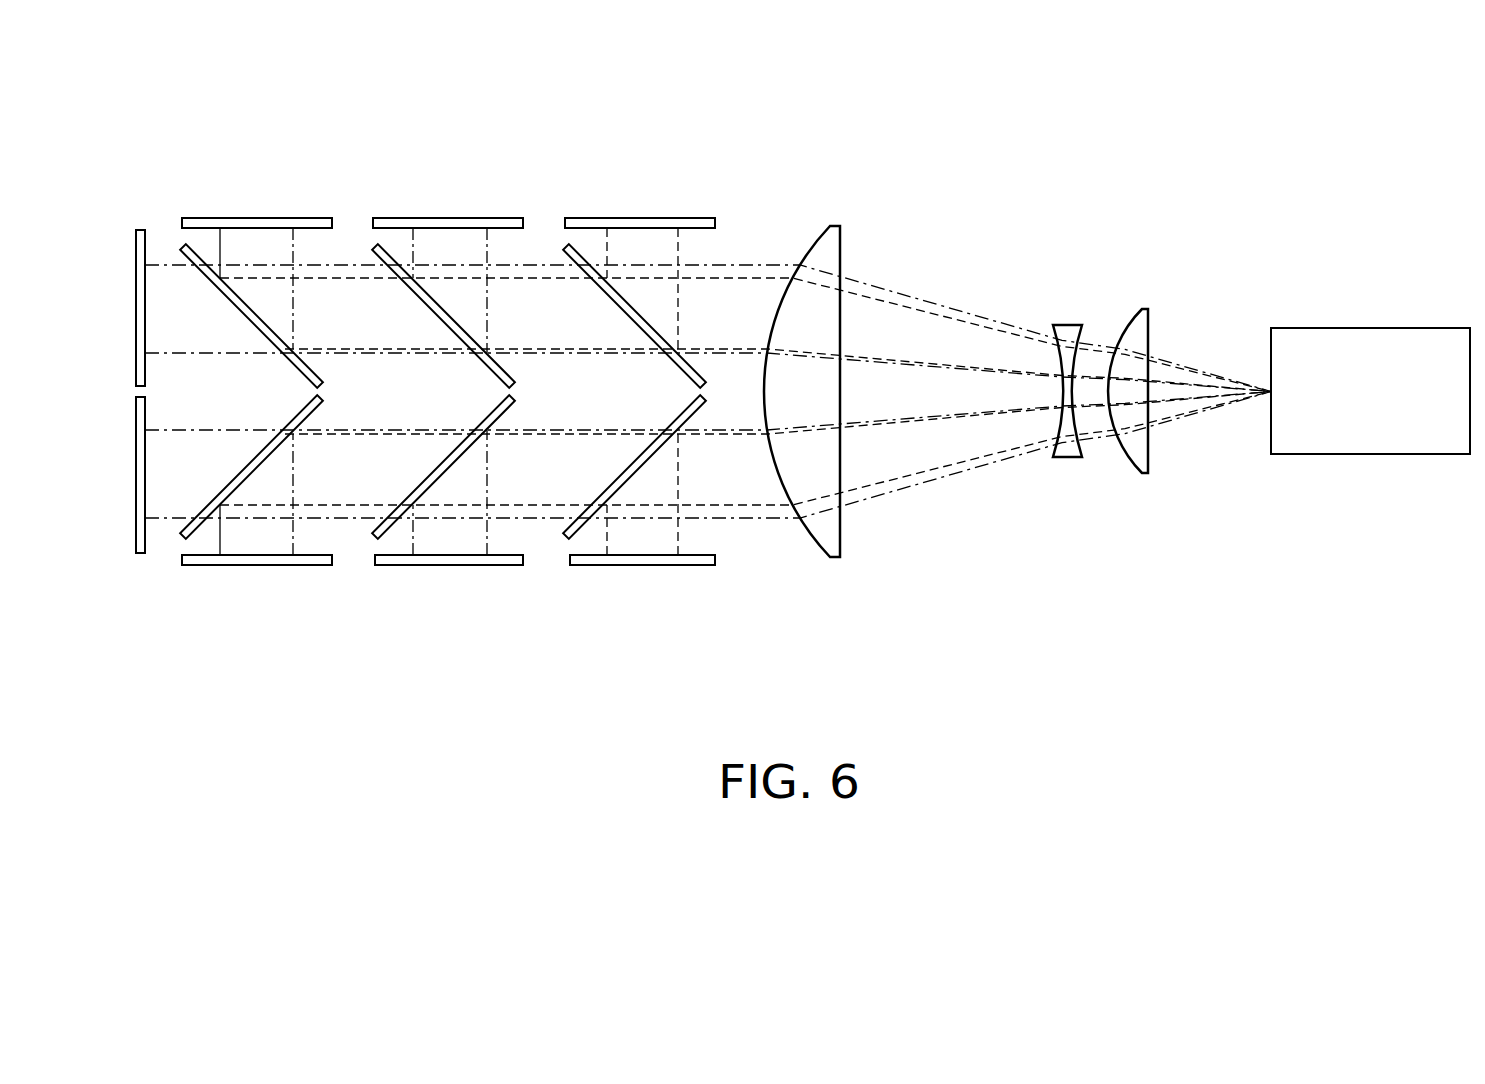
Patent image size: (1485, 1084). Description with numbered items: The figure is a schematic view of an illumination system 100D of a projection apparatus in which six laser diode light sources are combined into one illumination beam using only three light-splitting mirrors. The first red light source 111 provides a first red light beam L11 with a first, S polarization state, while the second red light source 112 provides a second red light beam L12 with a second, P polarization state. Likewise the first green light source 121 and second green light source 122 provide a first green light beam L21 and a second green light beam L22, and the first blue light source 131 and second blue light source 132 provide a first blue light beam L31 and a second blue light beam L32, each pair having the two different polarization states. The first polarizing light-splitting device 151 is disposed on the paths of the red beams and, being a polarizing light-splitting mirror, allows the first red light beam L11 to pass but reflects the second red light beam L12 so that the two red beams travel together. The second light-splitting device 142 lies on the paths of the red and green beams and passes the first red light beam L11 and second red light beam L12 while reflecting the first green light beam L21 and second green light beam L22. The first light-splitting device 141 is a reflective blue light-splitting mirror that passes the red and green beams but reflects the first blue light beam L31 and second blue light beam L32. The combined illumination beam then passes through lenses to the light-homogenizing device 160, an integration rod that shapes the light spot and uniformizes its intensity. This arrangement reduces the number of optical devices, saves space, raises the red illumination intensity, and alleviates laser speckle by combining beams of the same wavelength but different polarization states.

The illumination system 100D is at (1438, 699).
The first red light source 111 is at (141, 229).
The second red light source 112 is at (248, 218).
The first green light source 121 is at (443, 565).
The second green light source 122 is at (443, 218).
The first blue light source 131 is at (635, 565).
The second blue light source 132 is at (635, 218).
The first light-splitting device 141 is at (567, 243).
The second light-splitting device 142 is at (377, 243).
The first polarizing light-splitting device 151 is at (182, 244).
The light-homogenizing device 160 is at (1347, 340).
The first red light beam L11 is at (157, 266).
The second red light beam L12 is at (296, 247).
The first green light beam L21 is at (488, 536).
The second green light beam L22 is at (488, 247).
The first blue light beam L31 is at (680, 536).
The second blue light beam L32 is at (680, 247).